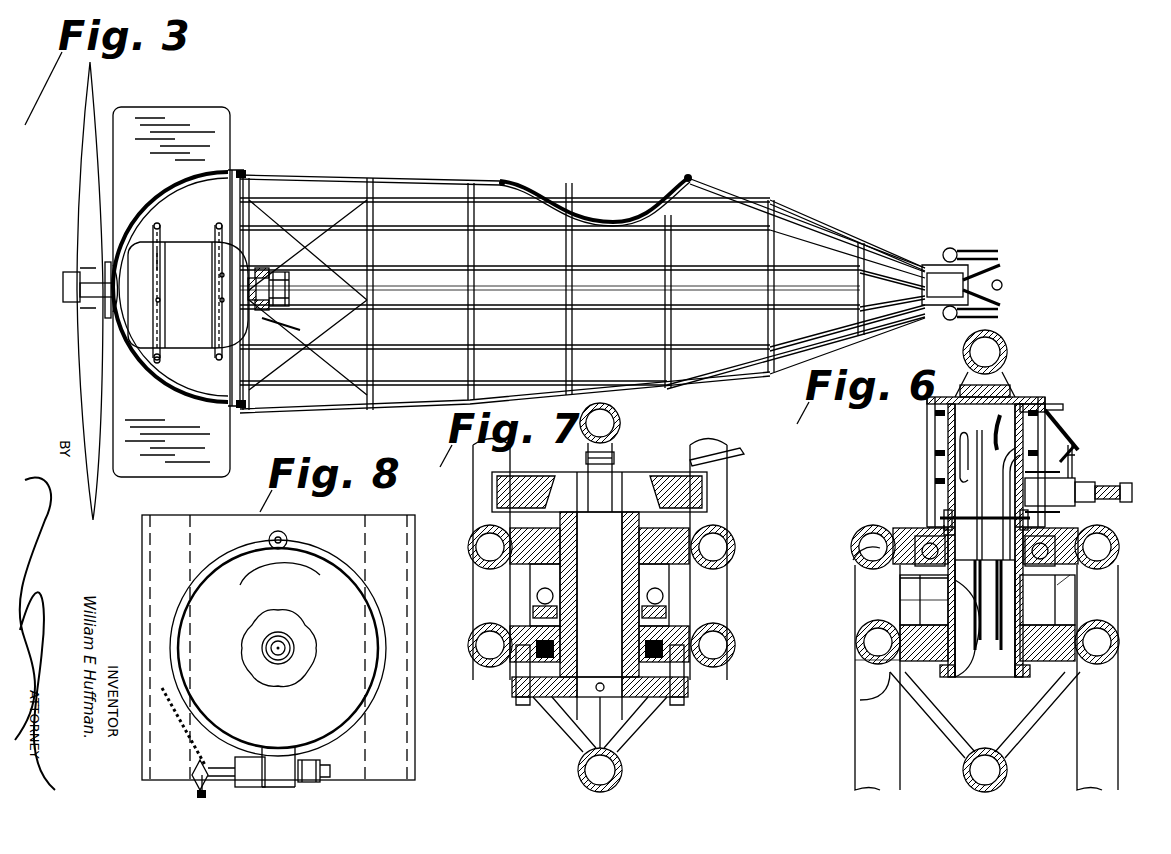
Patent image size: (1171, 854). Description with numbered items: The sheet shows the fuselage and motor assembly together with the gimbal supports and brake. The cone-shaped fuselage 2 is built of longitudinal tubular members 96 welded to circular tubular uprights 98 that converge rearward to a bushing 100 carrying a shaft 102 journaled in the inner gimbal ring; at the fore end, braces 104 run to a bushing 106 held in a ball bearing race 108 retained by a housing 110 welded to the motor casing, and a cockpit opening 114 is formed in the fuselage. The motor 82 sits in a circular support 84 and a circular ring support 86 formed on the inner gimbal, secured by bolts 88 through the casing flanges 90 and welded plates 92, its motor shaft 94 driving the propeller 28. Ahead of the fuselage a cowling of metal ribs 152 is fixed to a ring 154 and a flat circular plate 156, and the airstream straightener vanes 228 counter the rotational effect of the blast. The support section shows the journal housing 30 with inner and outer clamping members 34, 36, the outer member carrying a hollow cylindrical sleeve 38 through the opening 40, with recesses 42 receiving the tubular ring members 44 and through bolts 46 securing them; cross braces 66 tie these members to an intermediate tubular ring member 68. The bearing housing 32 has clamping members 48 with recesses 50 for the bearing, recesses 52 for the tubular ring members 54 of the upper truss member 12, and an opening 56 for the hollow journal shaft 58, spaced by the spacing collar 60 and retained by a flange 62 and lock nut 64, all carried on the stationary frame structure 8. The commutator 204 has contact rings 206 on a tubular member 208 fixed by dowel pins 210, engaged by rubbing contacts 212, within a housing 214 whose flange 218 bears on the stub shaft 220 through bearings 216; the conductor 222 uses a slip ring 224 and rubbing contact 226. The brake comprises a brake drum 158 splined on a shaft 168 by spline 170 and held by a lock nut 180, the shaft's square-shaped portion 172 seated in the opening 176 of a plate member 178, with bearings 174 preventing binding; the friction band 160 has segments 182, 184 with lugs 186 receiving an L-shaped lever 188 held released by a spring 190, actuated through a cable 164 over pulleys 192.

In FIG. 3, the fuselage 2 is at (715, 192).
In FIG. 7, the stationary frame structure 8 is at (620, 705).
In FIG. 6, the upper truss member 12 is at (855, 690).
In FIG. 3, the propeller 28 is at (80, 145).
In FIG. 6, the journal housing 30 is at (865, 700).
In FIG. 6, the bearing housing 32 is at (1068, 571).
In FIG. 8, the inner clamping member 34 is at (395, 582).
In FIG. 6, the inner clamping member 34 is at (1070, 618).
In FIG. 6, the outer clamping member 36 is at (1085, 668).
In FIG. 6, the hollow cylindrical sleeve 38 is at (924, 600).
In FIG. 6, the opening 40 is at (900, 600).
In FIG. 6, the recesses 42 is at (858, 638).
In FIG. 6, the tubular ring members 44 is at (860, 656).
In FIG. 6, the through bolts 46 is at (860, 677).
In FIG. 6, the clamping members 48 is at (858, 546).
In FIG. 6, the recesses 50 is at (905, 530).
In FIG. 6, the recesses 52 is at (880, 528).
In FIG. 6, the tubular ring members 54 is at (860, 564).
In FIG. 6, the opening 56 is at (942, 520).
In FIG. 7, the journal shaft 58 is at (520, 690).
In FIG. 6, the journal shaft 58 is at (975, 677).
In FIG. 6, the spacing collar 60 is at (1030, 576).
In FIG. 6, the flange 62 is at (1080, 526).
In FIG. 6, the lock nut 64 is at (942, 676).
In FIG. 6, the cross braces 66 is at (935, 718).
In FIG. 6, the intermediate tubular ring member 68 is at (1004, 770).
In FIG. 3, the motor 82 is at (188, 295).
In FIG. 3, the circular support 84 is at (212, 240).
In FIG. 3, the circular ring support 86 is at (164, 280).
In FIG. 3, the bolts 88 is at (150, 350).
In FIG. 3, the flanges 90 is at (162, 244).
In FIG. 3, the plates 92 is at (163, 358).
In FIG. 3, the motor shaft 94 is at (105, 285).
In FIG. 3, the longitudinal tubular members 96 is at (500, 238).
In FIG. 3, the tubular uprights 98 is at (740, 288).
In FIG. 3, the bushing 100 is at (958, 236).
In FIG. 3, the shaft 102 is at (925, 275).
In FIG. 3, the braces 104 is at (258, 222).
In FIG. 3, the bushing 106 is at (290, 268).
In FIG. 3, the ball bearing race 108 is at (290, 300).
In FIG. 3, the housing 110 is at (275, 326).
In FIG. 3, the cockpit opening 114 is at (565, 207).
In FIG. 3, the metal ribs 152 is at (200, 178).
In FIG. 3, the ring 154 is at (228, 195).
In FIG. 3, the flat circular plate 156 is at (113, 326).
In FIG. 8, the brake drum 158 is at (292, 562).
In FIG. 7, the brake drum 158 is at (655, 475).
In FIG. 8, the friction band 160 is at (345, 572).
In FIG. 7, the friction band 160 is at (710, 485).
In FIG. 8, the cable 164 is at (212, 792).
In FIG. 8, the shaft 168 is at (279, 648).
In FIG. 7, the shaft 168 is at (601, 594).
In FIG. 7, the spline 170 is at (610, 482).
In FIG. 7, the square-shaped portion 172 is at (672, 704).
In FIG. 7, the bearings 174 is at (578, 492).
In FIG. 7, the opening 176 is at (585, 740).
In FIG. 7, the plate member 178 is at (545, 702).
In FIG. 7, the lock nut 180 is at (612, 448).
In FIG. 8, the segment 182 is at (330, 557).
In FIG. 8, the segment 184 is at (232, 562).
In FIG. 8, the lug 186 is at (290, 785).
In FIG. 8, the L-shaped lever 188 is at (198, 764).
In FIG. 8, the spring 190 is at (165, 708).
In FIG. 8, the pulleys 192 is at (195, 778).
In FIG. 6, the commutator 204 is at (945, 455).
In FIG. 6, the contact rings 206 is at (935, 470).
In FIG. 6, the tubular member 208 is at (985, 540).
In FIG. 6, the dowel pins 210 is at (945, 515).
In FIG. 6, the rubbing contacts 212 is at (1078, 478).
In FIG. 6, the housing 214 is at (945, 397).
In FIG. 6, the bearings 216 is at (1005, 393).
In FIG. 6, the flange 218 is at (1000, 401).
In FIG. 6, the stub shaft 220 is at (962, 425).
In FIG. 6, the conductor 222 is at (1050, 420).
In FIG. 6, the slip ring 224 is at (1032, 404).
In FIG. 6, the rubbing contact 226 is at (1048, 408).
In FIG. 3, the vanes 228 is at (171, 292).